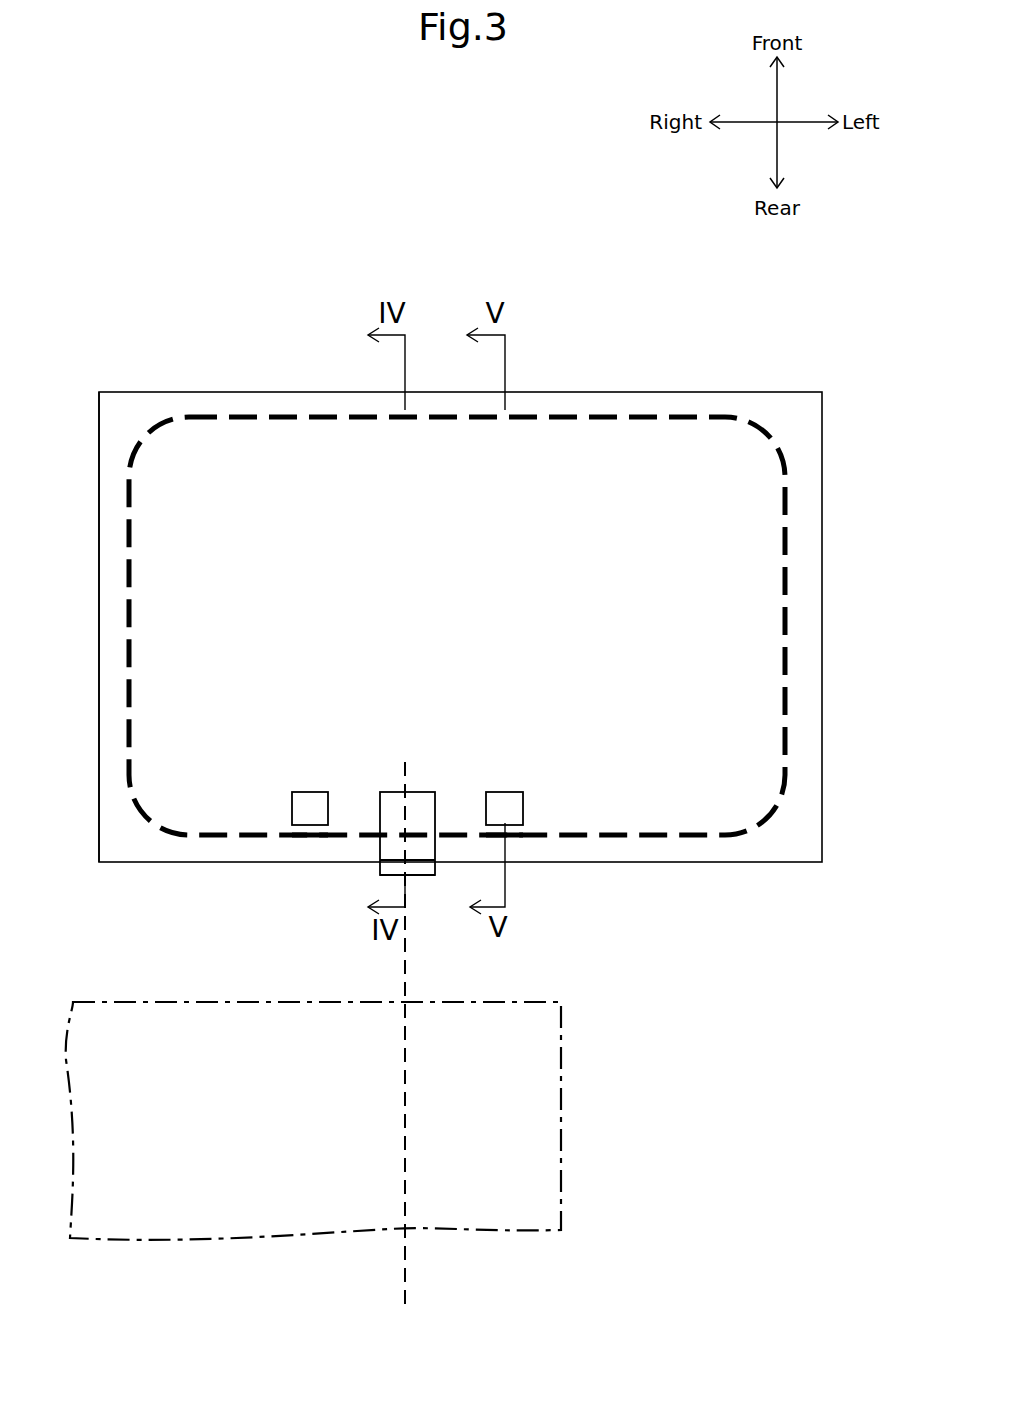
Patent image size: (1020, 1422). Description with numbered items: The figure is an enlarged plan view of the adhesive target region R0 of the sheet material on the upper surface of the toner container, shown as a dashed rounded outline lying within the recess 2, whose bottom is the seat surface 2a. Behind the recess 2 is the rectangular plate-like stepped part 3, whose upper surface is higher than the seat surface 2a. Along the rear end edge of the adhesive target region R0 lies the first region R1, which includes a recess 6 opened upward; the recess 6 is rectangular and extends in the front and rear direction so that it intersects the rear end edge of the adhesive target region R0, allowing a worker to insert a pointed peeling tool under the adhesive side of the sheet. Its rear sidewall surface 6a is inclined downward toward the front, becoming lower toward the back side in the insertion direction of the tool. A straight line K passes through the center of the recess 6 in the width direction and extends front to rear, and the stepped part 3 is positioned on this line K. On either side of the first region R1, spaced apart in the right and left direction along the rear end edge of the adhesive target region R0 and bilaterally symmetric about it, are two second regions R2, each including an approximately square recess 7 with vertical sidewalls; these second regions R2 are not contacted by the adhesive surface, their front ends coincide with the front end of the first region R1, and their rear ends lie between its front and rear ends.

The recess 2 is at (200, 392).
The seat surface 2a is at (124, 430).
The stepped part 3 is at (561, 1107).
The recess 6 is at (420, 855).
The rear sidewall surface 6a is at (391, 866).
The recess 7 is at (310, 815).
The straight line K is at (405, 1280).
The adhesive target region R0 is at (697, 410).
The first region R1 is at (416, 880).
The second region R2 is at (317, 832).